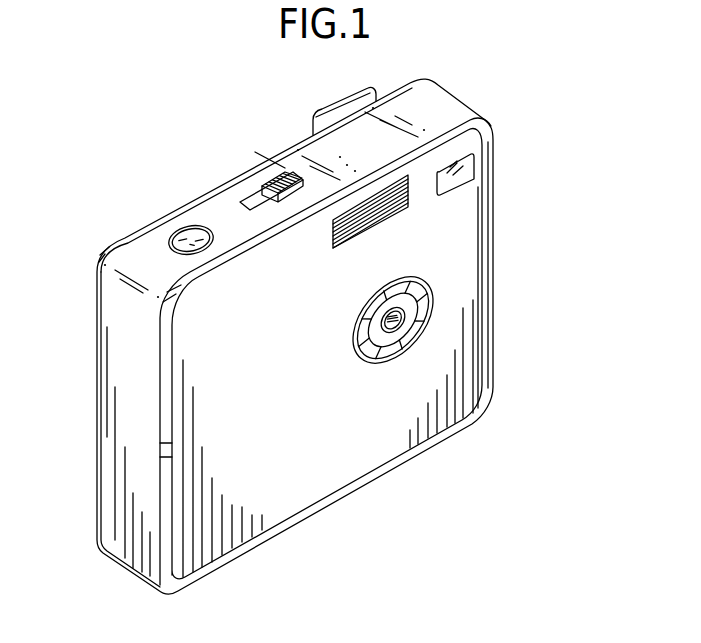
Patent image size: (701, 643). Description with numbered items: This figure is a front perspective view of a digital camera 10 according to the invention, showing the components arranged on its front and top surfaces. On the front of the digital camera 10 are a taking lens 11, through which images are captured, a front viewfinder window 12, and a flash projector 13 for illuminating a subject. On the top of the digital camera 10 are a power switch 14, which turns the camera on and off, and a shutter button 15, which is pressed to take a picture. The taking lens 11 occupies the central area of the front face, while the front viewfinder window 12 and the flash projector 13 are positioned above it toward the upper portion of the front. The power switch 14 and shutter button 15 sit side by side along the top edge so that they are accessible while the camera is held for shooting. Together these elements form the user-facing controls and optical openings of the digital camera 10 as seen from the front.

The digital camera 10 is at (506, 237).
The taking lens 11 is at (397, 323).
The front viewfinder window 12 is at (467, 168).
The flash projector 13 is at (383, 210).
The power switch 14 is at (278, 173).
The shutter button 15 is at (196, 237).